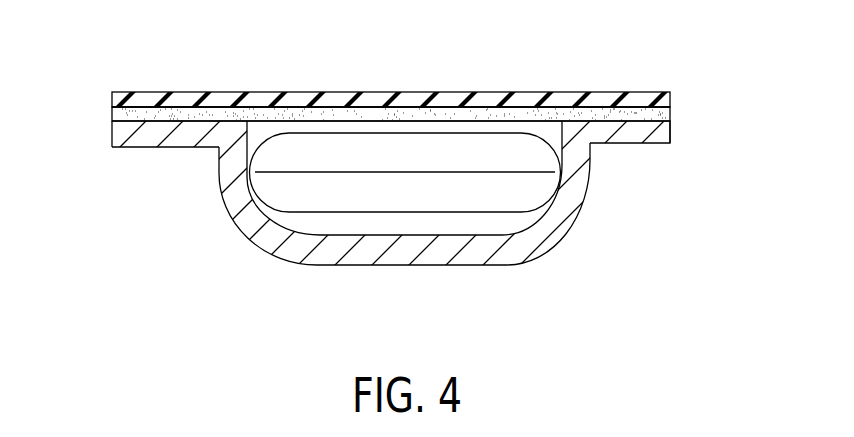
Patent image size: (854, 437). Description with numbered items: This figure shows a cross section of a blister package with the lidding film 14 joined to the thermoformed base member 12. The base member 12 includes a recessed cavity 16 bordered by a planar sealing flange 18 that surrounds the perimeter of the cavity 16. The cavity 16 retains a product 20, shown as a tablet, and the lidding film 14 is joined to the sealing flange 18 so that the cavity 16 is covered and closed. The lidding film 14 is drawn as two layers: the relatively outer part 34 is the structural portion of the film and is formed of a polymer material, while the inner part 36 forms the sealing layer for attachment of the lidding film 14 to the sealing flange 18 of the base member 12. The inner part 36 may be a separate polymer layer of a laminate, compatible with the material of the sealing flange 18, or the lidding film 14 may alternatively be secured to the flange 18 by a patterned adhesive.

The base member 12 is at (411, 214).
The lidding film 14 is at (595, 93).
The recessed cavity 16 is at (353, 252).
The sealing flange 18 is at (660, 132).
The product 20 is at (272, 193).
The outer part of the lidding film 34 is at (118, 101).
The inner part of the lidding film 36 is at (120, 115).